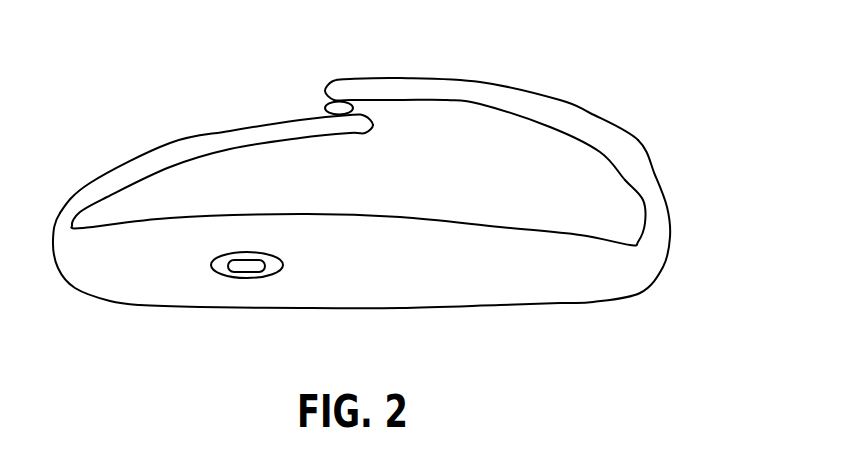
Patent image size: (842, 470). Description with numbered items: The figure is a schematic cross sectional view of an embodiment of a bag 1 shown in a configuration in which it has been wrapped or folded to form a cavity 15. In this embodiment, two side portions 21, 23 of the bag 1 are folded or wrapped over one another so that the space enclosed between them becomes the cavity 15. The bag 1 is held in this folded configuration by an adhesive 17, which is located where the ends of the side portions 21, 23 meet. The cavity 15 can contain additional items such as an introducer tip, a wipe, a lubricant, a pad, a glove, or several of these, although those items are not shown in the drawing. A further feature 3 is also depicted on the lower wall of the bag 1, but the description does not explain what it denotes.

The bag 1 is at (665, 267).
The opening / button 3 is at (222, 270).
The cavity 15 is at (549, 162).
The adhesive 17 is at (325, 106).
The side portion 21 is at (182, 142).
The side portion 23 is at (525, 86).